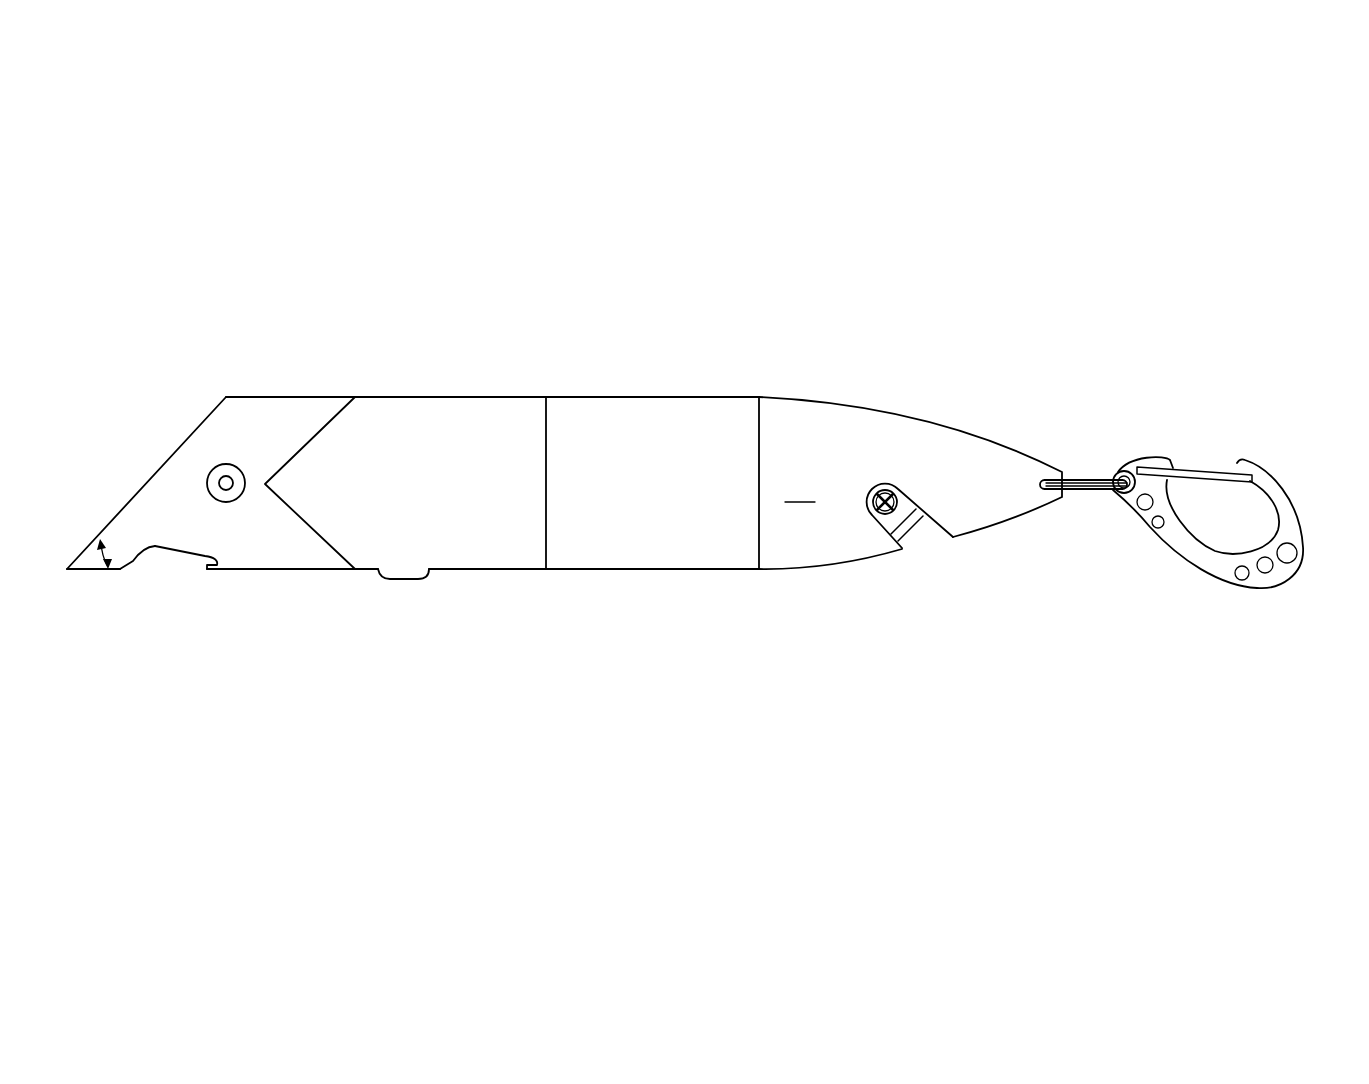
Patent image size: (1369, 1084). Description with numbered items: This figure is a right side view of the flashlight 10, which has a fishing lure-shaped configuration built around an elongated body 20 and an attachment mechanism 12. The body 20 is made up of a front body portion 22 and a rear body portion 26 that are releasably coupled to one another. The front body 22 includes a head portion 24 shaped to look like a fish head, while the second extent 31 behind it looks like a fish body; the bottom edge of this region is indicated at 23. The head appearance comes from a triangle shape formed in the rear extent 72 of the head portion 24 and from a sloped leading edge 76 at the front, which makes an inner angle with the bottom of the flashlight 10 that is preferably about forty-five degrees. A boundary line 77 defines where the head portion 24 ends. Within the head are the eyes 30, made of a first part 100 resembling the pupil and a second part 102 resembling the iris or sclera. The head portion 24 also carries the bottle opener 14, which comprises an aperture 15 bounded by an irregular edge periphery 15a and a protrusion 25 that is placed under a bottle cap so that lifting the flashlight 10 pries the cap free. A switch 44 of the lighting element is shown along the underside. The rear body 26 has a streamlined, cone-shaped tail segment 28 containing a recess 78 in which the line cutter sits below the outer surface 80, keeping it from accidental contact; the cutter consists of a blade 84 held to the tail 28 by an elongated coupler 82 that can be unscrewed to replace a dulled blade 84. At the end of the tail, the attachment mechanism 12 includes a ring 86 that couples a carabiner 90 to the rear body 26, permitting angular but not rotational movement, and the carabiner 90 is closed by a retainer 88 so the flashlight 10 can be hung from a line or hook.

The flashlight 10 is at (200, 122).
The attachment mechanism 12 is at (1264, 634).
The bottle opener 14 is at (146, 672).
The aperture 15 is at (136, 614).
The irregular edge periphery 15a is at (134, 563).
The elongated body 20 is at (582, 246).
The front body portion 22 is at (416, 306).
The bottom edge 23 is at (660, 560).
The head portion 24 is at (260, 407).
The protrusion 25 is at (208, 562).
The rear body portion 26 is at (752, 324).
The tail segment 28 is at (913, 447).
The eyes 30 is at (140, 370).
The second extent 31 is at (485, 408).
The switch 44 is at (405, 573).
The rear extent 72 is at (300, 587).
The sloped leading edge 76 is at (73, 614).
The boundary line 77 is at (330, 420).
The recess 78 is at (955, 551).
The outer surface 80 is at (800, 487).
The elongated coupler 82 is at (873, 507).
The blade 84 is at (893, 522).
The ring 86 is at (1083, 481).
The retainer 88 is at (1203, 477).
The carabiner 90 is at (1293, 535).
The first part 100 is at (225, 476).
The second part 102 is at (218, 480).